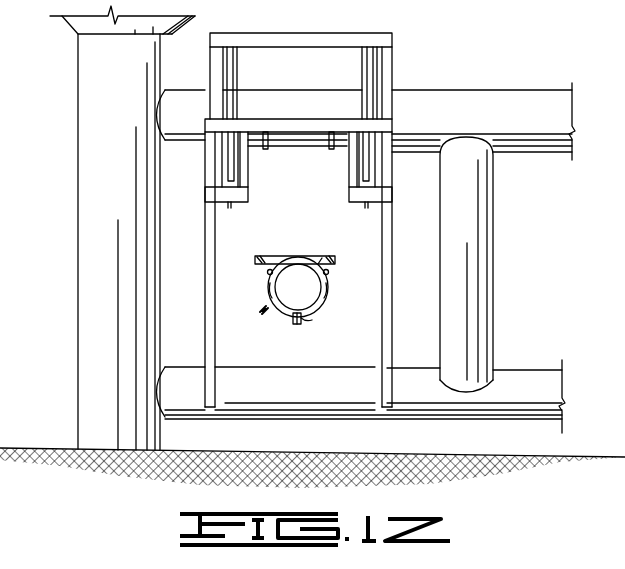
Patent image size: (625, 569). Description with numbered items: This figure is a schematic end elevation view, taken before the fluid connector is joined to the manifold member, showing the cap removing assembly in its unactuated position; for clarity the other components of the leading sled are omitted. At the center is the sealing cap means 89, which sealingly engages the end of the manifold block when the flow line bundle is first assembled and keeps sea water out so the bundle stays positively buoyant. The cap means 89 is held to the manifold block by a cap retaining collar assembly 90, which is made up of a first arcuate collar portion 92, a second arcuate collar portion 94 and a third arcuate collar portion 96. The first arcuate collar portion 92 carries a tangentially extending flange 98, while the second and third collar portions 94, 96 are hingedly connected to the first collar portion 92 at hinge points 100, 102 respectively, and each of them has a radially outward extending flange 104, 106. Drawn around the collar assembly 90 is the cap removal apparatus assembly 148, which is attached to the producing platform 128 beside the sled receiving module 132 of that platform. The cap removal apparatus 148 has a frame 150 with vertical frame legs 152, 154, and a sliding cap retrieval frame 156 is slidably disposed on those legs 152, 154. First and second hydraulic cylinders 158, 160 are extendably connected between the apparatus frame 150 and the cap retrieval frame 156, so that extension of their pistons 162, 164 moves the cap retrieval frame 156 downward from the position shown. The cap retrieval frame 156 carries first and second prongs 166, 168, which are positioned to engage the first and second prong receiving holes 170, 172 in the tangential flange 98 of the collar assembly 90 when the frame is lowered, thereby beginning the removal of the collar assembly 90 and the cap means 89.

The cap means 89 is at (310, 295).
The cap retaining collar assembly 90 is at (259, 311).
The first arcuate collar portion 92 is at (298, 256).
The second arcuate collar portion 94 is at (268, 289).
The third arcuate collar portion 96 is at (327, 293).
The tangentially extending flange 98 is at (322, 258).
The hinge point 100 is at (267, 272).
The hinge point 102 is at (329, 272).
The radially outward extending flange 104 is at (292, 322).
The radially outward extending flange 106 is at (306, 320).
The producing platform 128 is at (82, 417).
The sled receiving module 132 is at (74, 270).
The cap removal apparatus assembly 148 is at (303, 209).
The frame 150 is at (268, 32).
The vertical frame leg 152 is at (213, 64).
The vertical frame leg 154 is at (386, 78).
The sliding cap retrieval frame 156 is at (318, 124).
The first hydraulic cylinder 158 is at (230, 72).
The second hydraulic cylinder 160 is at (364, 66).
The piston 162 is at (236, 195).
The piston 164 is at (360, 195).
The first prong 166 is at (268, 150).
The second prong 168 is at (329, 153).
The first prong receiving hole 170 is at (262, 255).
The second prong receiving hole 172 is at (335, 259).